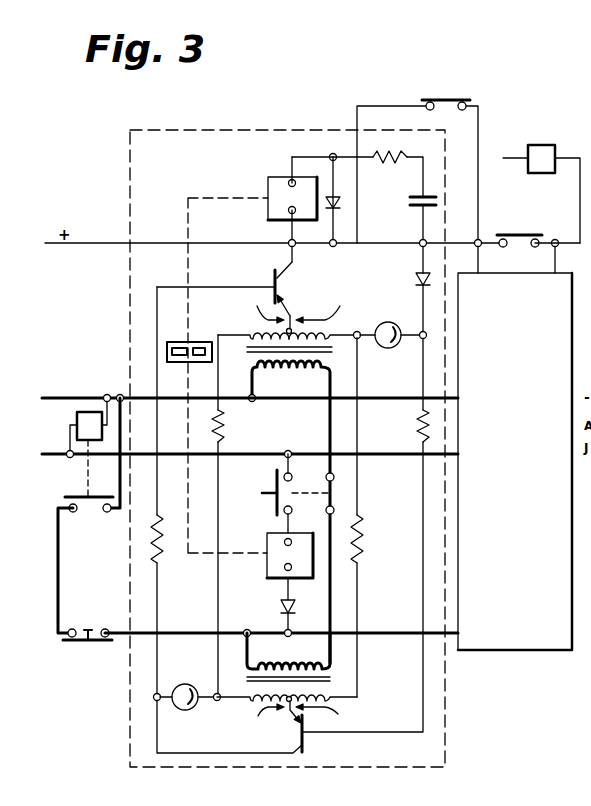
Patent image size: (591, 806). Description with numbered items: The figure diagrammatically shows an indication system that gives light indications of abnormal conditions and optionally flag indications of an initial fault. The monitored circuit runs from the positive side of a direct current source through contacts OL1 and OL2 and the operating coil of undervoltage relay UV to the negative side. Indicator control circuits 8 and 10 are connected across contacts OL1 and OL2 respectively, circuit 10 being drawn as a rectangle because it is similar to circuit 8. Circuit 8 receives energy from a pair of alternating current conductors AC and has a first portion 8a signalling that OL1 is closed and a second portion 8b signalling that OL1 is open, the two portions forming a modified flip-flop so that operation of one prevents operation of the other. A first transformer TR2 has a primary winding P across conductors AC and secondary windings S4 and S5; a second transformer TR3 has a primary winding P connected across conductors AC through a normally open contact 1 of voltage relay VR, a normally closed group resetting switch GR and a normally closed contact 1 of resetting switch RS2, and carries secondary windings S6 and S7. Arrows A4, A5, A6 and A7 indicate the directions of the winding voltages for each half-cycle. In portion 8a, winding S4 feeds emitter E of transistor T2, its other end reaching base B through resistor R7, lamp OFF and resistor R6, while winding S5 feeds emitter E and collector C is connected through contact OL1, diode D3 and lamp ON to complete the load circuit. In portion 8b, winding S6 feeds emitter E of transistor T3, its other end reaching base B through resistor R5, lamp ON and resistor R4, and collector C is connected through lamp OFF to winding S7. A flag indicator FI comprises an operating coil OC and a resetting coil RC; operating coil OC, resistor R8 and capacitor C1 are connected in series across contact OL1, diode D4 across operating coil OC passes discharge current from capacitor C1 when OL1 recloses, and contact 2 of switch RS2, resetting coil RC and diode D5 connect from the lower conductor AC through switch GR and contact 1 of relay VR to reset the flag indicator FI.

The indicator control circuit 8 is at (260, 129).
The first portion of indicator control circuit 8a is at (346, 260).
The second portion of indicator control circuit 8b is at (386, 596).
The indicator control circuit 10 is at (520, 650).
The contact 1 is at (89, 507).
The contact of resetting switch 2 is at (294, 498).
The operating coil OC is at (268, 188).
The diode D4 is at (325, 206).
The diode D3 is at (416, 279).
The diode D5 is at (276, 606).
The contact OL1 is at (447, 110).
The contact OL2 is at (517, 234).
The resistor R8 is at (398, 163).
The resistor R7 is at (232, 428).
The resistor R6 is at (163, 556).
The resistor R5 is at (365, 552).
The resistor R4 is at (411, 427).
The capacitor C1 is at (409, 204).
The undervoltage relay UV is at (558, 150).
The transistor T2 is at (300, 298).
The transistor T3 is at (280, 738).
The base B is at (255, 279).
The collector C is at (281, 259).
The emitter E is at (301, 307).
The arrow A4 is at (264, 307).
The arrow A5 is at (323, 306).
The arrow A6 is at (322, 716).
The arrow A7 is at (263, 715).
The secondary winding S4 is at (254, 331).
The secondary winding S5 is at (332, 331).
The secondary winding S6 is at (338, 702).
The secondary winding S7 is at (252, 702).
The primary winding P is at (295, 376).
The first transformer TR2 is at (306, 487).
The second transformer TR3 is at (283, 654).
The on lamp ON is at (391, 327).
The off lamp OFF is at (188, 689).
The flag indicator FI is at (182, 342).
The voltage relay VR is at (90, 400).
The power supply conductors AC is at (55, 448).
The resetting switch RS2 is at (268, 486).
The resetting coil RC is at (270, 547).
The group resetting switch GR is at (89, 623).